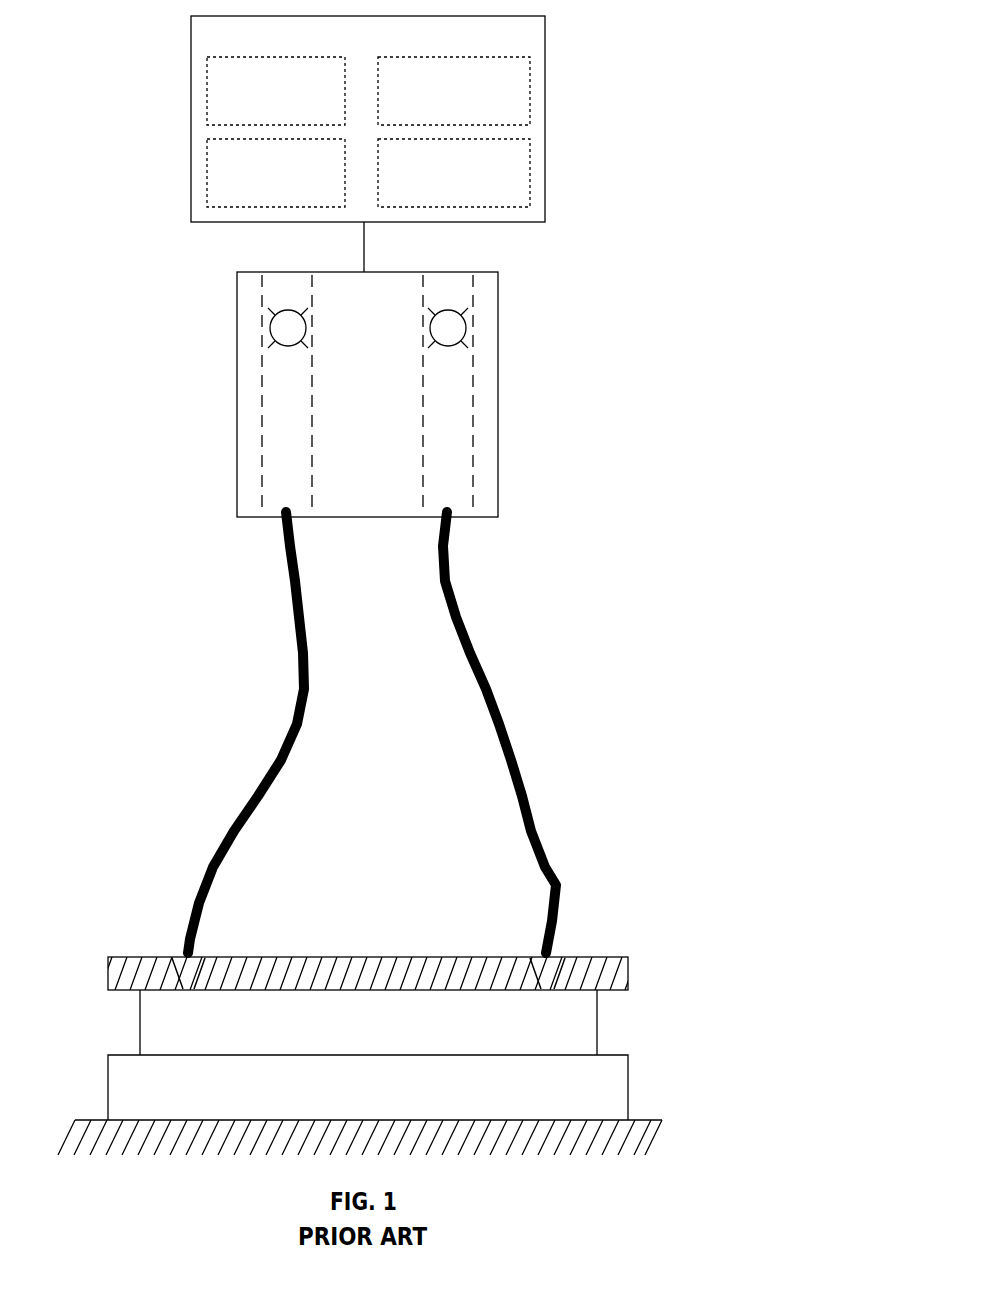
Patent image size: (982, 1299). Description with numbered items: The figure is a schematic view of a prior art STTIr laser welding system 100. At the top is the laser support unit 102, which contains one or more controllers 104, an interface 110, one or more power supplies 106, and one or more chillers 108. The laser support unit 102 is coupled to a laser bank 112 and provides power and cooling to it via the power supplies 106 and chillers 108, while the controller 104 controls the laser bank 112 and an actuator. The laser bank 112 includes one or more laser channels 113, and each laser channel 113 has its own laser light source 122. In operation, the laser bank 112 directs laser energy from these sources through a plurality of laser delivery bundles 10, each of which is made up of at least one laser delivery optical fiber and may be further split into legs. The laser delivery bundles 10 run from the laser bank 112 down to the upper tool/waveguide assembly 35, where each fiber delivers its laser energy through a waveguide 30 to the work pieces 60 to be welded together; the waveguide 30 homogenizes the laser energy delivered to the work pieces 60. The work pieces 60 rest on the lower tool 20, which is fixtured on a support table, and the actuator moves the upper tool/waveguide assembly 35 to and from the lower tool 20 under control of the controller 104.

The STTIr laser welding system 100 is at (718, 148).
The laser support unit 102 is at (545, 40).
The controller 104 is at (208, 90).
The power supply 106 is at (208, 177).
The chiller 108 is at (530, 170).
The interface 110 is at (530, 78).
The laser bank 112 is at (499, 295).
The laser channel 113 is at (262, 378).
The laser light source 122 is at (287, 328).
The laser delivery bundle 10 is at (307, 636).
The waveguide 30 is at (550, 978).
The upper tool/waveguide assembly 35 is at (610, 978).
The work pieces 60 is at (563, 1020).
The lower tool 20 is at (655, 1138).